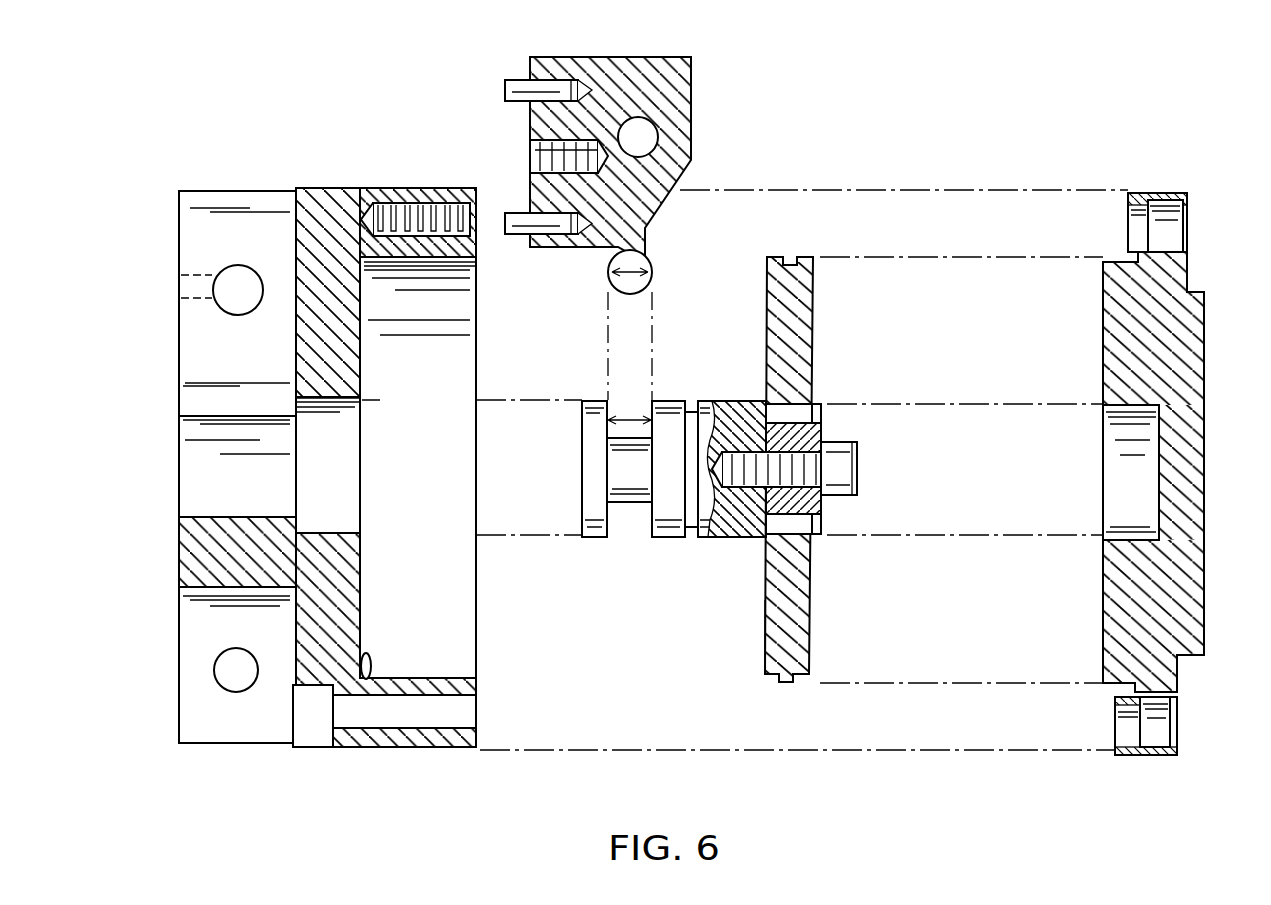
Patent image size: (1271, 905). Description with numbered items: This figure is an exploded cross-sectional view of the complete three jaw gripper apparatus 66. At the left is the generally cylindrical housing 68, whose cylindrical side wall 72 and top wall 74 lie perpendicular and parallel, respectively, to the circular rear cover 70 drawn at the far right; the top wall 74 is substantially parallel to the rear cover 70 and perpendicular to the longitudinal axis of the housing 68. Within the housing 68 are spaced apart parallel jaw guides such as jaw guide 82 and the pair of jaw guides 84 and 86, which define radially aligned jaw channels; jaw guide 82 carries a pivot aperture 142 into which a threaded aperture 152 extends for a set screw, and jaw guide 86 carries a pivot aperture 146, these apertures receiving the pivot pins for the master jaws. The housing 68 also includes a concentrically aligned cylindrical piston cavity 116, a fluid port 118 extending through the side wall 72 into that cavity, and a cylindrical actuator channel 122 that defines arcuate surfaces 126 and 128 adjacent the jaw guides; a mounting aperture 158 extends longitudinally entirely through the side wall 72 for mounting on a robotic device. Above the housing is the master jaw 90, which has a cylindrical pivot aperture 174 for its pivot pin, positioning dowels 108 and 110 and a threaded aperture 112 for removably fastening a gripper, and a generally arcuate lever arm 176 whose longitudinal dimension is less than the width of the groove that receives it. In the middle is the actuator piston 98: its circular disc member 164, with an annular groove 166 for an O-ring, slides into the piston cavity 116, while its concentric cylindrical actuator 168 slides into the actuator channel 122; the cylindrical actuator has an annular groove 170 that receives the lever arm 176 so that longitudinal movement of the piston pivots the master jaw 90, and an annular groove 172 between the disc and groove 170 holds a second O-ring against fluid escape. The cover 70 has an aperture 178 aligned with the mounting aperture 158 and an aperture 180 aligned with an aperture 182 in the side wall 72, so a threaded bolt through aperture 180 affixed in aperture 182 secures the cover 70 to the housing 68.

The three jaw gripper apparatus 66 is at (160, 160).
The housing 68 is at (314, 186).
The rear cover 70 is at (1204, 300).
The side wall 72 is at (415, 188).
The top wall 74 is at (296, 215).
The jaw guide 82 is at (179, 214).
The jaw guide 84 is at (179, 474).
The jaw guide 86 is at (179, 627).
The master jaw 90 is at (698, 100).
The actuator piston 98 is at (766, 628).
The positioning dowel 108 is at (512, 84).
The positioning dowel 110 is at (512, 222).
The threaded aperture 112 is at (530, 150).
The piston cavity 116 is at (478, 672).
The fluid port 118 is at (372, 665).
The actuator channel 122 is at (310, 520).
The arcuate surface 126 is at (205, 436).
The arcuate surface 128 is at (185, 516).
The pivot aperture 142 is at (238, 265).
The pivot aperture 146 is at (222, 668).
The threaded aperture 152 is at (183, 297).
The mounting aperture 158 is at (370, 728).
The disc member 164 is at (812, 331).
The annular groove 166 is at (790, 257).
The cylindrical actuator 168 is at (597, 538).
The annular groove 170 is at (646, 538).
The annular groove 172 is at (702, 400).
The pivot aperture 174 is at (640, 117).
The lever arm 176 is at (653, 263).
The aperture 178 is at (1168, 742).
The aperture 180 is at (1187, 215).
The aperture 182 is at (470, 212).